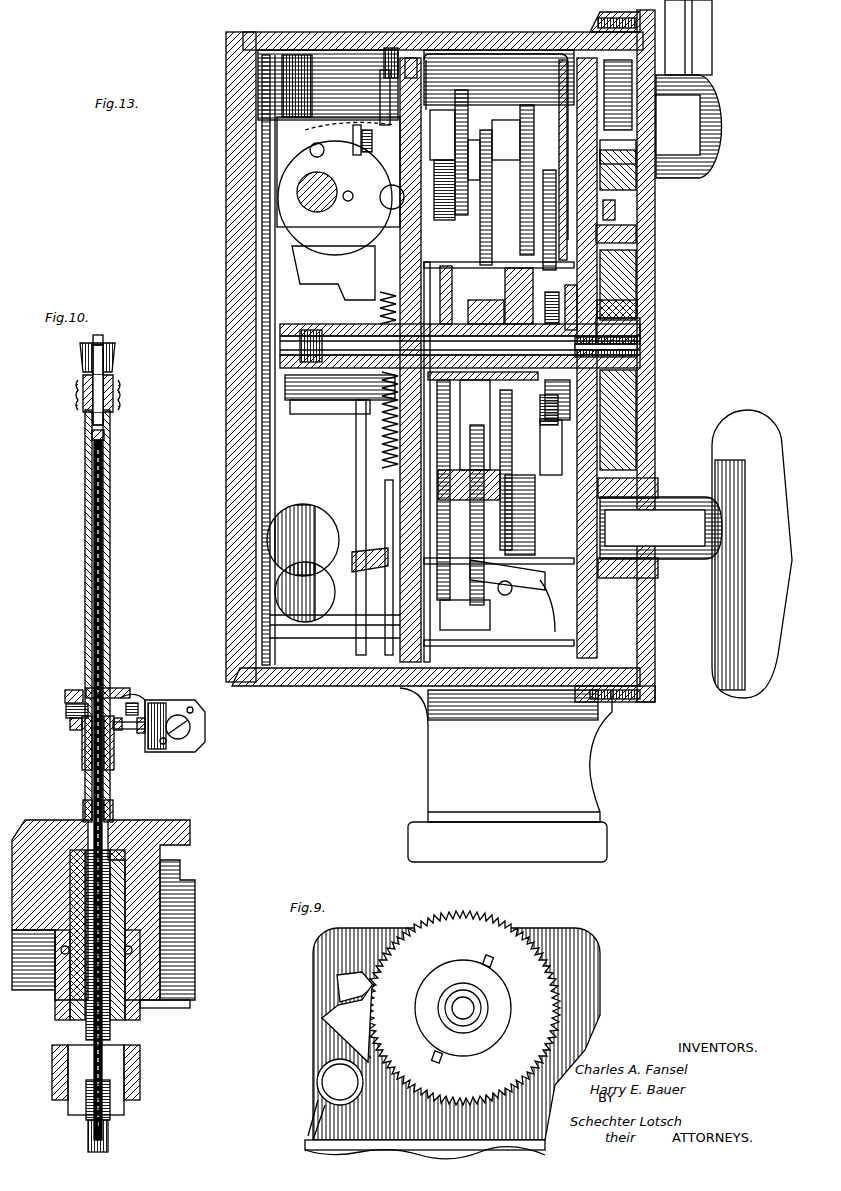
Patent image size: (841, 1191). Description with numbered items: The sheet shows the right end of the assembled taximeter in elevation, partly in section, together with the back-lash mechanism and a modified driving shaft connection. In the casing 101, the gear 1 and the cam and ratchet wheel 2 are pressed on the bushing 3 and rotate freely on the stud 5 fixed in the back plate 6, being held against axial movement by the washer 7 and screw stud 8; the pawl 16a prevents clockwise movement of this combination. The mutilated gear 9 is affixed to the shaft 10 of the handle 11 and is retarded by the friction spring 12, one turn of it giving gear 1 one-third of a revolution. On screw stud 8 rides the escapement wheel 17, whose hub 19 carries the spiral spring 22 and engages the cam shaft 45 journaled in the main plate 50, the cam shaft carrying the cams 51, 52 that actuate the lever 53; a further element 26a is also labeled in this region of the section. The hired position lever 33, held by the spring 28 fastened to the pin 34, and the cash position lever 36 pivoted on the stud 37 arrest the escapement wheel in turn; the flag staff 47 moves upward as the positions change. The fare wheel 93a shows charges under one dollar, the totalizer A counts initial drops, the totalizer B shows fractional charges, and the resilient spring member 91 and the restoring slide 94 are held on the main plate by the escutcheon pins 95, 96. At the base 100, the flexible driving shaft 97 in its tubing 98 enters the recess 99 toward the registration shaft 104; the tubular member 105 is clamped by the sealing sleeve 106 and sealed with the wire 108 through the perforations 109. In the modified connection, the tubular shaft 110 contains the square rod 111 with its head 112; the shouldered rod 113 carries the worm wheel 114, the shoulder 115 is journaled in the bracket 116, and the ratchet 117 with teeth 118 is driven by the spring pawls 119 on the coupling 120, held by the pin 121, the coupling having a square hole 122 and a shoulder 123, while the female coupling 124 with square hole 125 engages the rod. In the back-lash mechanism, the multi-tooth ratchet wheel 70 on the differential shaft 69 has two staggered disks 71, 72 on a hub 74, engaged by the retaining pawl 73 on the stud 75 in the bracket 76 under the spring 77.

In FIG. 13, the gear 1 is at (588, 240).
In FIG. 13, the cam and ratchet wheel 2 is at (615, 278).
In FIG. 13, the bushing 3 is at (625, 322).
In FIG. 13, the stud 5 is at (645, 343).
In FIG. 13, the back plate 6 is at (648, 231).
In FIG. 13, the washer 7 is at (598, 308).
In FIG. 13, the screw stud 8 is at (630, 352).
In FIG. 13, the mutilated gear 9 is at (540, 584).
In FIG. 13, the shaft 10 is at (662, 482).
In FIG. 13, the handle 11 is at (745, 412).
In FIG. 13, the friction spring 12 is at (648, 462).
In FIG. 13, the pawl 16a is at (606, 210).
In FIG. 13, the escapement wheel 17 is at (568, 285).
In FIG. 13, the hub 19 is at (460, 346).
In FIG. 13, the spiral spring 22 is at (552, 292).
In FIG. 13, the pinion 26a is at (540, 398).
In FIG. 13, the spring 28 is at (545, 425).
In FIG. 13, the hired position lever 33 is at (566, 445).
In FIG. 13, the pin 34 is at (550, 440).
In FIG. 13, the cash position lever 36 is at (572, 85).
In FIG. 13, the stud 37 is at (630, 163).
In FIG. 13, the cam shaft 45 is at (506, 320).
In FIG. 13, the staff 47 is at (712, 32).
In FIG. 13, the main plate 50 is at (411, 65).
In FIG. 13, the cam 51 is at (499, 277).
In FIG. 13, the cam 52 is at (478, 307).
In FIG. 13, the lever 53 is at (454, 293).
In FIG. 9, the differential shaft 69 is at (478, 1003).
In FIG. 9, the multi-tooth ratchet wheel 70 is at (498, 935).
In FIG. 9, the disk 71 is at (466, 910).
In FIG. 9, the disk 72 is at (483, 912).
In FIG. 9, the retaining pawl 73 is at (340, 988).
In FIG. 9, the hub 74 is at (440, 972).
In FIG. 9, the stud 75 is at (330, 1088).
In FIG. 9, the bracket 76 is at (596, 958).
In FIG. 9, the spring 77 is at (334, 1032).
In FIG. 13, the resilient spring member 91 is at (372, 130).
In FIG. 13, the fare wheel 93a is at (326, 252).
In FIG. 13, the restoring slide 94 is at (291, 130).
In FIG. 13, the escutcheon pin 95 is at (392, 45).
In FIG. 13, the escutcheon pin 96 is at (384, 72).
In FIG. 10, the flexible driving shaft 97 is at (106, 1141).
In FIG. 10, the tubing 98 is at (112, 1113).
In FIG. 10, the recess 99 is at (172, 957).
In FIG. 13, the base 100 is at (420, 838).
In FIG. 10, the base 100 is at (158, 1006).
In FIG. 13, the casing 101 is at (576, 773).
In FIG. 13, the registration shaft 104 is at (555, 632).
In FIG. 10, the tubular member 105 is at (150, 838).
In FIG. 10, the sealing sleeve 106 is at (140, 1063).
In FIG. 10, the wire 108 is at (62, 975).
In FIG. 10, the perforations 109 is at (140, 950).
In FIG. 10, the shaft 110 is at (110, 613).
In FIG. 10, the square rod 111 is at (97, 548).
In FIG. 10, the head 112 is at (112, 436).
In FIG. 10, the shouldered rod 113 is at (100, 376).
In FIG. 10, the worm wheel 114 is at (118, 393).
In FIG. 10, the shoulder 115 is at (110, 688).
In FIG. 10, the bracket 116 is at (168, 710).
In FIG. 10, the ratchet 117 is at (70, 697).
In FIG. 10, the teeth 118 is at (68, 708).
In FIG. 10, the spring pawls 119 is at (128, 705).
In FIG. 10, the coupling 120 is at (88, 735).
In FIG. 10, the pin 121 is at (125, 734).
In FIG. 10, the square hole 122 is at (108, 768).
In FIG. 10, the shoulder 123 is at (88, 760).
In FIG. 10, the female coupling 124 is at (112, 807).
In FIG. 10, the square hole 125 is at (85, 812).
In FIG. 13, the totalizer A is at (310, 605).
In FIG. 13, the totalizer B is at (303, 520).